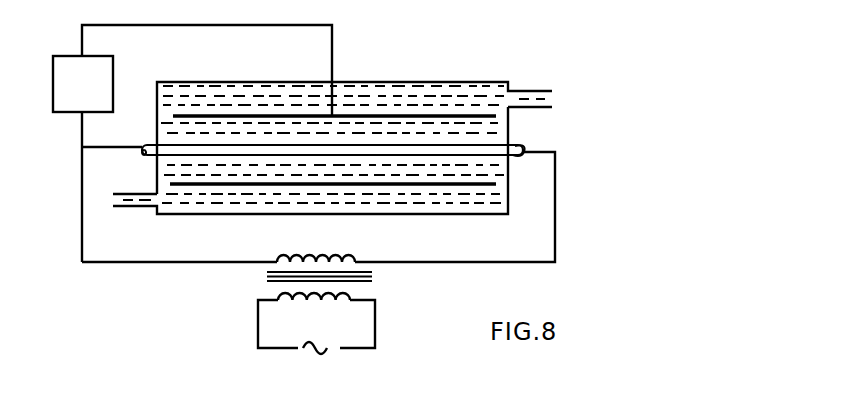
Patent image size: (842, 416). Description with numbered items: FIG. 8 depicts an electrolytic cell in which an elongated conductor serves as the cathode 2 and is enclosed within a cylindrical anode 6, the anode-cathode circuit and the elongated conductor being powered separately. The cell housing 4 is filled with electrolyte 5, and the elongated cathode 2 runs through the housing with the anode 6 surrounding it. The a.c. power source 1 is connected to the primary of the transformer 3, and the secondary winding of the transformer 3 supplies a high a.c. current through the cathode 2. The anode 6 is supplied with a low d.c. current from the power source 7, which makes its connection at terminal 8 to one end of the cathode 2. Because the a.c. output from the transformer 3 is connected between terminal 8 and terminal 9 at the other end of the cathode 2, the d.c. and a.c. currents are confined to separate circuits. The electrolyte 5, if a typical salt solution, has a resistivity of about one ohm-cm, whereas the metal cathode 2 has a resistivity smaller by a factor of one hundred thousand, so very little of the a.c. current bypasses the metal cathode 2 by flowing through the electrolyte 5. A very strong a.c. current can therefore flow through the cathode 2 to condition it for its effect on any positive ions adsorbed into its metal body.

The a.c. power source 1 is at (315, 365).
The cathode 2 is at (520, 146).
The transformer 3 is at (241, 301).
The cell housing 4 is at (414, 82).
The electrolyte 5 is at (473, 93).
The anode 6 is at (282, 116).
The power source 7 is at (72, 97).
The terminal 8 is at (321, 164).
The terminal 9 is at (455, 207).